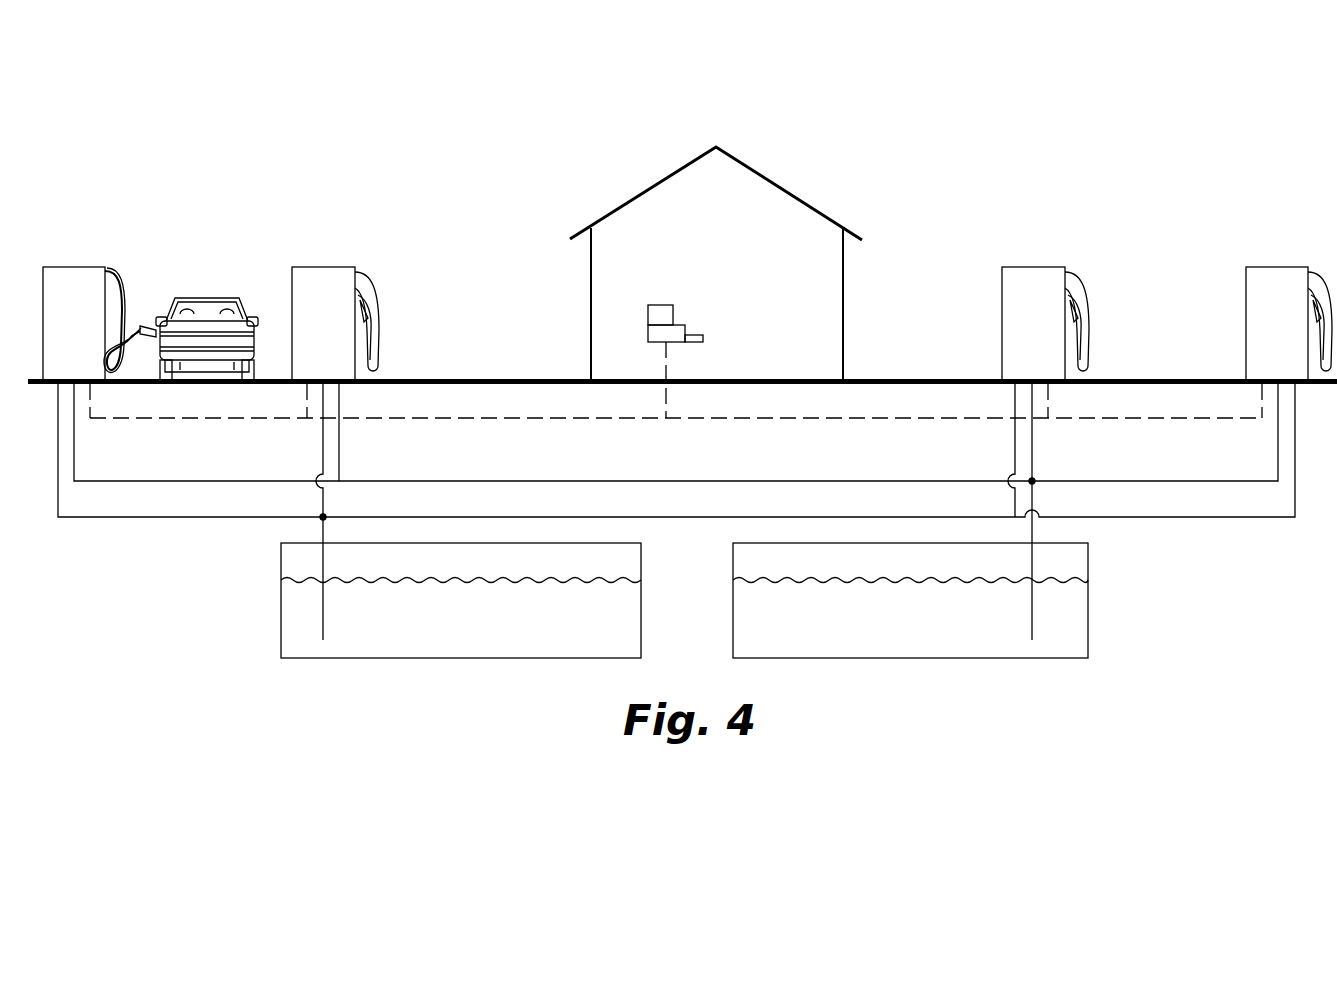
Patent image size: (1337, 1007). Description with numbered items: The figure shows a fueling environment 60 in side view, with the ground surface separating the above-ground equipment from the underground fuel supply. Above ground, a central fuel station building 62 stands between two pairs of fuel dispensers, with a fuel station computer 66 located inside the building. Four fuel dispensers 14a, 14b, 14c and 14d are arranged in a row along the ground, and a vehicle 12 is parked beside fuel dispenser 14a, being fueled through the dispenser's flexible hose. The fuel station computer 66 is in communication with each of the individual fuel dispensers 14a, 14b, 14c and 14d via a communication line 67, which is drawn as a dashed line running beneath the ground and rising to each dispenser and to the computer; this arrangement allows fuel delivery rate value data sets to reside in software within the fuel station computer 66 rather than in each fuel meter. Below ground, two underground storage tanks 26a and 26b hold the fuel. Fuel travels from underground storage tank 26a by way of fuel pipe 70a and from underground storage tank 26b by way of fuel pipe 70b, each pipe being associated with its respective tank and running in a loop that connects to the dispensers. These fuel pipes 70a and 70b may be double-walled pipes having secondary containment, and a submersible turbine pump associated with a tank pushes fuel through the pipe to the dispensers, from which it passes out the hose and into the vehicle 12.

The fueling environment 60 is at (845, 100).
The vehicle 12 is at (185, 297).
The fuel dispenser 14a is at (79, 267).
The fuel dispenser 14b is at (322, 267).
The fuel dispenser 14c is at (1031, 267).
The fuel dispenser 14d is at (1271, 267).
The central fuel station building 62 is at (728, 221).
The fuel station computer 66 is at (697, 309).
The communication line 67 is at (728, 421).
The fuel pipe 70a is at (163, 520).
The fuel pipe 70b is at (1112, 479).
The underground storage tank 26a is at (280, 618).
The underground storage tank 26b is at (1090, 618).